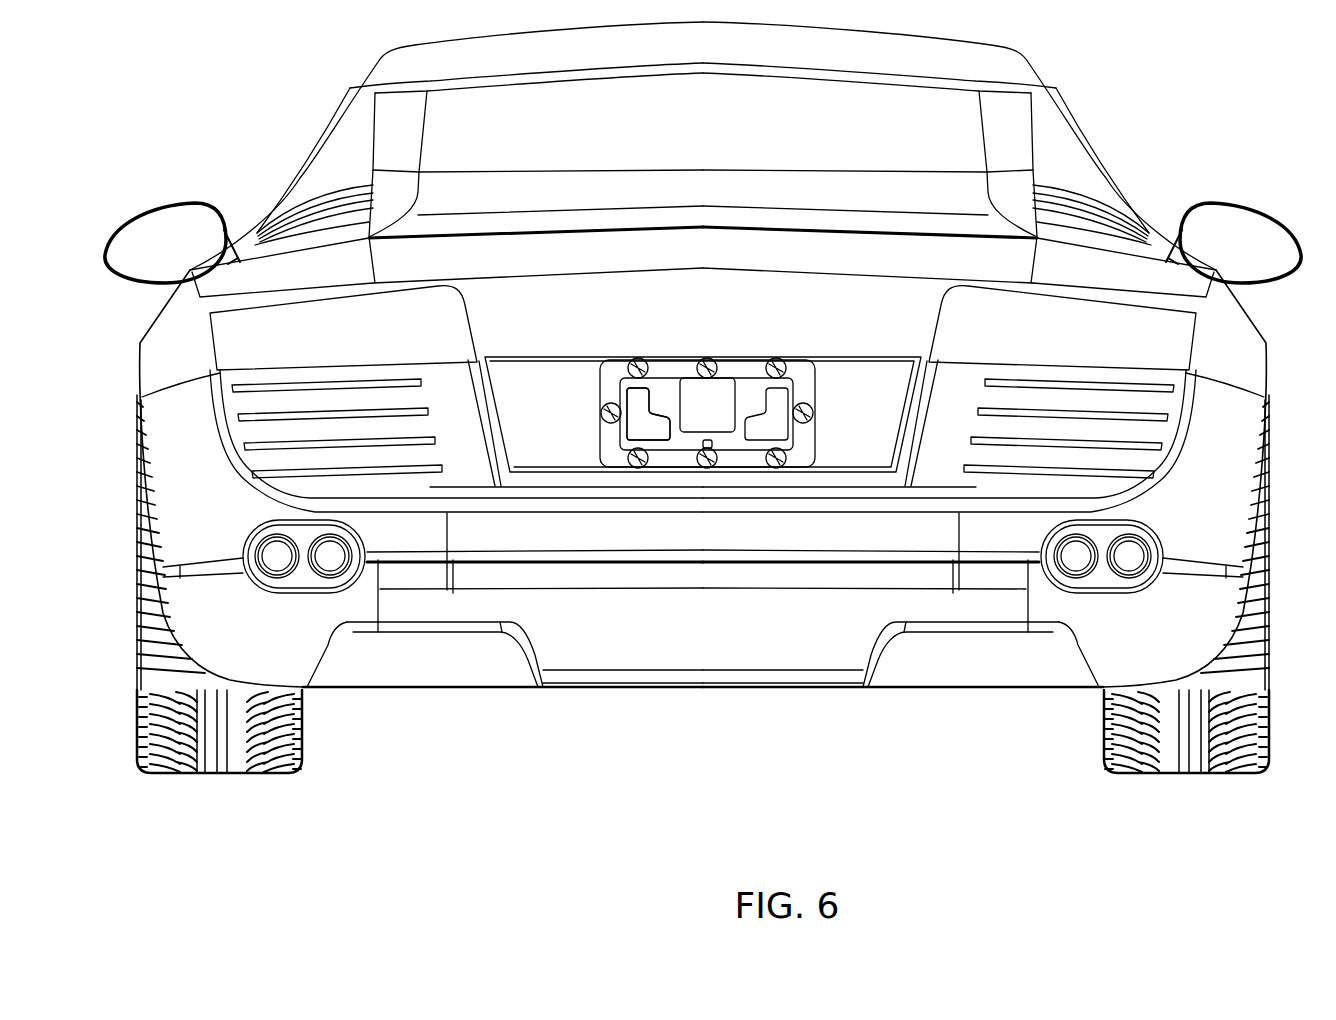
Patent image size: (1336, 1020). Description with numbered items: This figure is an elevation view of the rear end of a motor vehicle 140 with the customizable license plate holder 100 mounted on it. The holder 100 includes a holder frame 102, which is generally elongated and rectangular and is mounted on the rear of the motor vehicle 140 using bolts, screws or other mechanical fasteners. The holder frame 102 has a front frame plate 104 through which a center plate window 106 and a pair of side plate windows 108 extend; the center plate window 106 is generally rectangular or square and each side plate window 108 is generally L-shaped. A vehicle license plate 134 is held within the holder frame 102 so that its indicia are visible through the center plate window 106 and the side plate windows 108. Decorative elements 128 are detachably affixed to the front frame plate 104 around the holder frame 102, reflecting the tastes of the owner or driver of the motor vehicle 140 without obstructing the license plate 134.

The customizable license plate holder 100 is at (594, 375).
The holder frame 102 is at (814, 391).
The front frame plate 104 is at (809, 400).
The center plate window 106 is at (733, 409).
The side plate window 108 is at (637, 434).
The decorative element 128 is at (710, 357).
The vehicle license plate 134 is at (642, 405).
The motor vehicle 140 is at (363, 73).